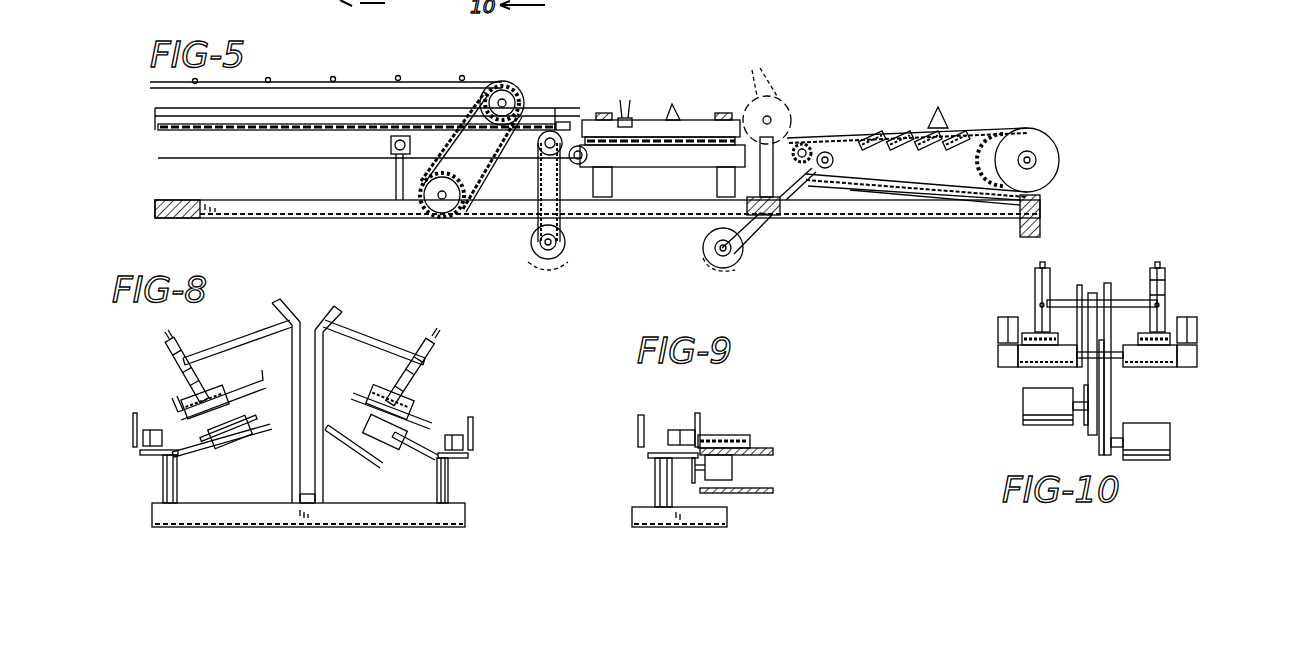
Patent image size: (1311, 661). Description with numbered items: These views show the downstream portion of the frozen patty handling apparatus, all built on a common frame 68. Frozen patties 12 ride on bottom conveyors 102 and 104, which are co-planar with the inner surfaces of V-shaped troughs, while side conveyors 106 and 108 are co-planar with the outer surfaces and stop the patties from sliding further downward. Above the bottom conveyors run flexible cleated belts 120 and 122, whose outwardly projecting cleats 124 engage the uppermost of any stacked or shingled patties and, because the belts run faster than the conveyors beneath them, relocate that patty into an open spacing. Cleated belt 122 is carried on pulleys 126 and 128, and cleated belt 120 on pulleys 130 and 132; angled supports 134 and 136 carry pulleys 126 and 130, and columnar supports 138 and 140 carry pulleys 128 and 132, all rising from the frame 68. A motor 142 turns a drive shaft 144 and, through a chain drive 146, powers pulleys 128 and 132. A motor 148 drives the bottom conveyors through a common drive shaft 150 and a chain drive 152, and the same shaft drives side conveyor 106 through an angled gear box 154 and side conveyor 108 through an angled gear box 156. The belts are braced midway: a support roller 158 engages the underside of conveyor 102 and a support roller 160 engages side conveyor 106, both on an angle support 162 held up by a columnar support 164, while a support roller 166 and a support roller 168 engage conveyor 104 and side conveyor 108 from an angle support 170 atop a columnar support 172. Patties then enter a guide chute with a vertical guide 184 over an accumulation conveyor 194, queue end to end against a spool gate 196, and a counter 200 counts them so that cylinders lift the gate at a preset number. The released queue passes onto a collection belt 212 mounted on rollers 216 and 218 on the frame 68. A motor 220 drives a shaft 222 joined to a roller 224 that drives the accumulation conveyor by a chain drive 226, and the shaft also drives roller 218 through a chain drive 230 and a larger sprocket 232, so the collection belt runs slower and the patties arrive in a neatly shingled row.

In FIG. 5, the frozen patty 12 is at (290, 132).
In FIG. 8, the frozen patty 12 is at (185, 398).
In FIG. 9, the frozen patty 12 is at (720, 434).
In FIG. 5, the frame 68 is at (277, 220).
In FIG. 8, the frame 68 is at (468, 516).
In FIG. 9, the frame 68 is at (728, 519).
In FIG. 5, the bottom conveyor 102 is at (345, 132).
In FIG. 8, the bottom conveyor 102 is at (425, 410).
In FIG. 10, the bottom conveyor 102 is at (1170, 360).
In FIG. 8, the bottom conveyor 104 is at (262, 378).
In FIG. 9, the bottom conveyor 104 is at (773, 488).
In FIG. 10, the bottom conveyor 104 is at (1030, 360).
In FIG. 5, the side conveyor 106 is at (300, 112).
In FIG. 8, the side conveyor 106 is at (470, 418).
In FIG. 10, the side conveyor 106 is at (1197, 330).
In FIG. 8, the side conveyor 108 is at (135, 418).
In FIG. 9, the side conveyor 108 is at (697, 412).
In FIG. 10, the side conveyor 108 is at (998, 325).
In FIG. 5, the cleated belt 120 is at (424, 108).
In FIG. 8, the cleated belt 120 is at (440, 338).
In FIG. 10, the cleated belt 120 is at (1166, 278).
In FIG. 8, the cleated belt 122 is at (168, 350).
In FIG. 10, the cleated belt 122 is at (1036, 280).
In FIG. 5, the cleats 124 is at (390, 78).
In FIG. 8, the cleats 124 is at (170, 336).
In FIG. 10, the cleats 124 is at (1040, 266).
In FIG. 8, the pulley 126 is at (205, 348).
In FIG. 10, the pulley 128 is at (1035, 300).
In FIG. 8, the pulley 130 is at (412, 348).
In FIG. 5, the pulley 132 is at (514, 84).
In FIG. 10, the pulley 132 is at (1166, 298).
In FIG. 8, the angled support 134 is at (282, 300).
In FIG. 8, the angled support 136 is at (337, 305).
In FIG. 10, the columnar support 138 is at (1078, 285).
In FIG. 10, the columnar support 140 is at (1093, 292).
In FIG. 5, the motor 142 is at (441, 217).
In FIG. 10, the motor 142 is at (1025, 406).
In FIG. 5, the drive shaft 144 is at (500, 88).
In FIG. 10, the drive shaft 144 is at (1110, 290).
In FIG. 5, the chain drive 146 is at (480, 168).
In FIG. 10, the chain drive 146 is at (1088, 426).
In FIG. 5, the motor 148 is at (545, 262).
In FIG. 10, the motor 148 is at (1170, 440).
In FIG. 5, the common drive shaft 150 is at (553, 130).
In FIG. 10, the common drive shaft 150 is at (1120, 358).
In FIG. 5, the chain drive 152 is at (565, 220).
In FIG. 10, the chain drive 152 is at (1112, 412).
In FIG. 10, the angled gear box 154 is at (1197, 355).
In FIG. 10, the angled gear box 156 is at (998, 355).
In FIG. 8, the support roller 158 is at (365, 406).
In FIG. 8, the support roller 160 is at (475, 430).
In FIG. 8, the angle support 162 is at (412, 448).
In FIG. 8, the columnar support 164 is at (448, 472).
In FIG. 8, the support roller 166 is at (243, 440).
In FIG. 8, the support roller 168 is at (138, 440).
In FIG. 8, the angle support 170 is at (195, 452).
In FIG. 8, the columnar support 172 is at (162, 478).
In FIG. 5, the vertical guide 184 is at (698, 120).
In FIG. 5, the accumulation conveyor 194 is at (662, 166).
In FIG. 5, the spool gate 196 is at (756, 76).
In FIG. 5, the counter 200 is at (632, 116).
In FIG. 5, the collection belt 212 is at (995, 134).
In FIG. 5, the roller 216 is at (858, 192).
In FIG. 5, the roller 218 is at (1040, 160).
In FIG. 5, the motor 220 is at (746, 252).
In FIG. 5, the shaft 222 is at (805, 142).
In FIG. 5, the roller 224 is at (830, 152).
In FIG. 5, the chain drive 226 is at (764, 226).
In FIG. 5, the chain drive 230 is at (868, 128).
In FIG. 5, the sprocket 232 is at (1038, 130).